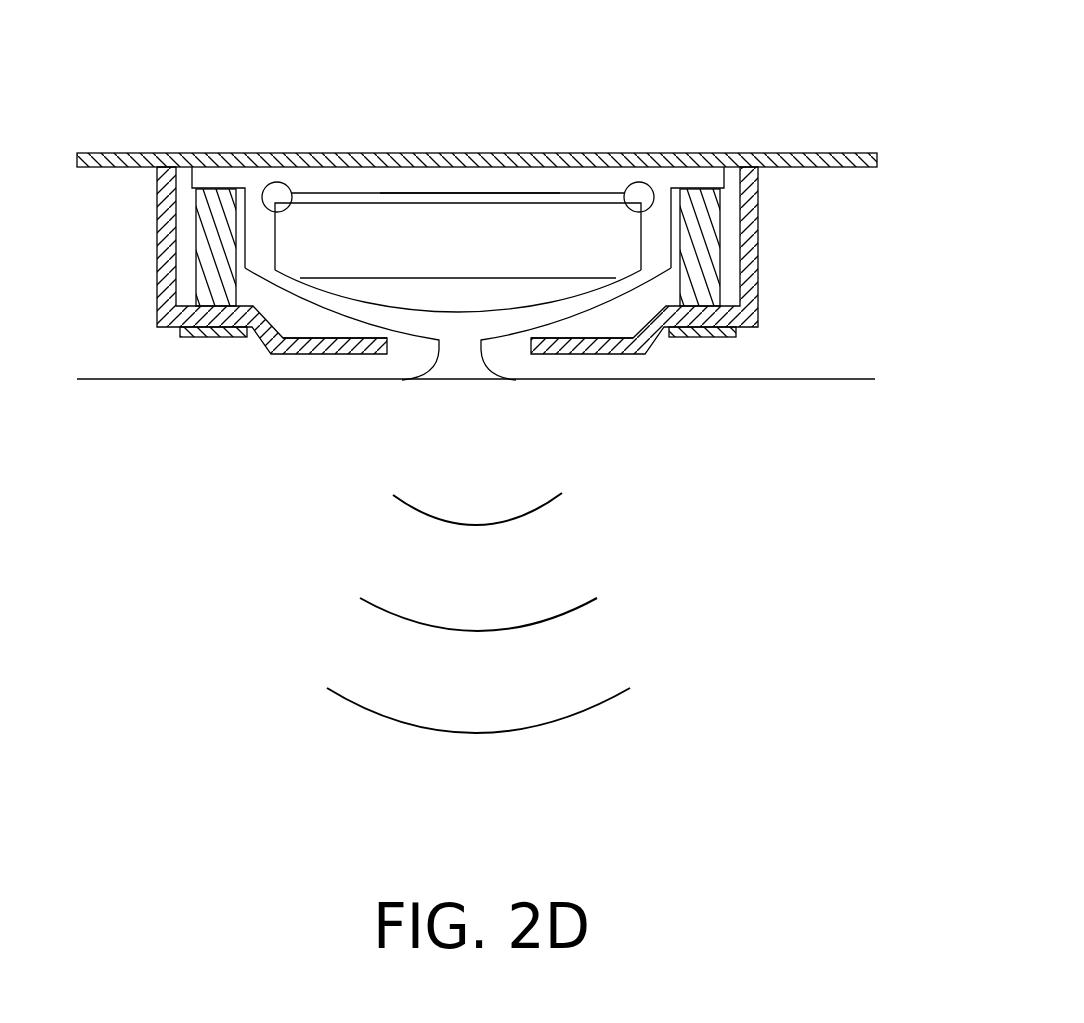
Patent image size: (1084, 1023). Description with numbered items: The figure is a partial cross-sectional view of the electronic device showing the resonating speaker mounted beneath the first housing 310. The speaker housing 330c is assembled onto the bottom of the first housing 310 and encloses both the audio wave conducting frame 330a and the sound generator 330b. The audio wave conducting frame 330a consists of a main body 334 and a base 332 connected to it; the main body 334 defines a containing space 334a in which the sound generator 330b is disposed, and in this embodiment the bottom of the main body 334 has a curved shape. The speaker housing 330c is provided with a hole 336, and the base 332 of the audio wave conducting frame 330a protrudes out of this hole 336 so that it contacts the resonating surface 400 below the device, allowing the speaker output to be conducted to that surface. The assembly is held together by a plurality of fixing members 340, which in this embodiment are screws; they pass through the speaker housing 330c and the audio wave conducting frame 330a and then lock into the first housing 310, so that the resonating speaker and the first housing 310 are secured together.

The first housing 310 is at (127, 153).
The audio wave conducting frame 330a is at (690, 166).
The sound generator 330b is at (365, 222).
The speaker housing 330c is at (749, 198).
The base 332 is at (463, 346).
The main body 334 is at (595, 177).
The containing space 334a is at (523, 196).
The hole 336 is at (531, 343).
The fixing members 340 is at (223, 338).
The resonating surface 400 is at (820, 357).